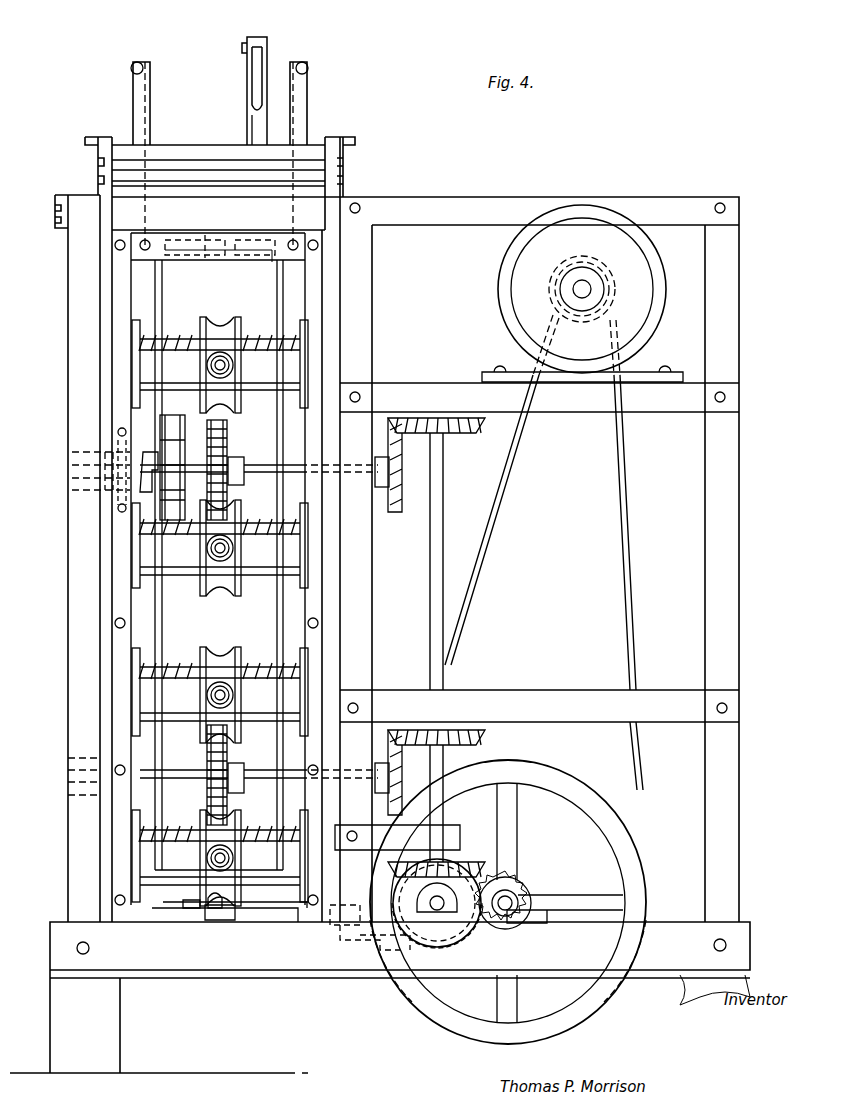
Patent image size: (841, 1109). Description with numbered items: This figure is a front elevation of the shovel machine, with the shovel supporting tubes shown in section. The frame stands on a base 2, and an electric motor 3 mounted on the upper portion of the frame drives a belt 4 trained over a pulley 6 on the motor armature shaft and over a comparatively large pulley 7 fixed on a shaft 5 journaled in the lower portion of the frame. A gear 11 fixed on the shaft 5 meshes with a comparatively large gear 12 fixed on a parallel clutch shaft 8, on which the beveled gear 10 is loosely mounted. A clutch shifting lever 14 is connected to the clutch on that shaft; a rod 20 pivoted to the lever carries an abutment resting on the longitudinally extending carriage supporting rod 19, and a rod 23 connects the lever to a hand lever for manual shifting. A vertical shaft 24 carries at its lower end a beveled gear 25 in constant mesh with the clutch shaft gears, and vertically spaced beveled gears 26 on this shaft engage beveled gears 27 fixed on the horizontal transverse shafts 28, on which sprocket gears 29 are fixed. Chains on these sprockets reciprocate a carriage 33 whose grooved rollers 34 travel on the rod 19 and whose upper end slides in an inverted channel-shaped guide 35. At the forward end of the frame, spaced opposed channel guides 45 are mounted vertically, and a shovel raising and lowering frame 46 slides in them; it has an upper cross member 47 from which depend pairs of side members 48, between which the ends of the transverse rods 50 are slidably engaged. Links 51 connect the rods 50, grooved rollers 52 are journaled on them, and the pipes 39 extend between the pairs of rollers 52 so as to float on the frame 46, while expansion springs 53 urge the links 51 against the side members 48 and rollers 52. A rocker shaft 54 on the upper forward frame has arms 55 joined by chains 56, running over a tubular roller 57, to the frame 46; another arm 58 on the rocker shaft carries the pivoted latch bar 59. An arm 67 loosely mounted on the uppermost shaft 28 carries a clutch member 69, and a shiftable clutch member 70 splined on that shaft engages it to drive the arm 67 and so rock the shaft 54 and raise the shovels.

The base 2 is at (125, 985).
The electric motor 3 is at (640, 282).
The belt 4 is at (628, 505).
The shaft 5 is at (520, 892).
The pulley 6 is at (620, 318).
The pulley 7 is at (567, 787).
The clutch shaft 8 is at (440, 905).
The beveled gear 10 is at (450, 875).
The gear 11 is at (540, 898).
The gear 12 is at (480, 880).
The clutch shifting lever 14 is at (290, 905).
The rod 19 is at (215, 925).
The rod 20 is at (195, 920).
The rod 23 is at (365, 930).
The shaft 24 is at (432, 578).
The beveled gear 25 is at (490, 865).
The beveled gears 26 is at (468, 432).
The beveled gears 27 is at (398, 510).
The transverse shafts 28 is at (305, 470).
The sprocket gears 29 is at (228, 460).
The carriage 33 is at (143, 634).
The grooved rollers 34 is at (230, 920).
The guide 35 is at (220, 230).
The pipes 39 is at (228, 365).
The frame member 45 is at (105, 298).
The shovel raising and lowering frame 46 is at (135, 605).
The upper cross member 47 is at (300, 268).
The side members 48 is at (120, 378).
The transverse rods 50 is at (145, 570).
The links 51 is at (135, 360).
The grooved rollers 52 is at (220, 335).
The expansion springs 53 is at (176, 325).
The rocker shaft 54 is at (165, 150).
The arms 55 is at (133, 78).
The chains 56 is at (145, 107).
The tubular roller 57 is at (180, 180).
The arm 58 is at (255, 118).
The latch bar 59 is at (268, 60).
The arm 67 is at (168, 420).
The clutch member 69 is at (142, 490).
The shiftable clutch member 70 is at (125, 450).